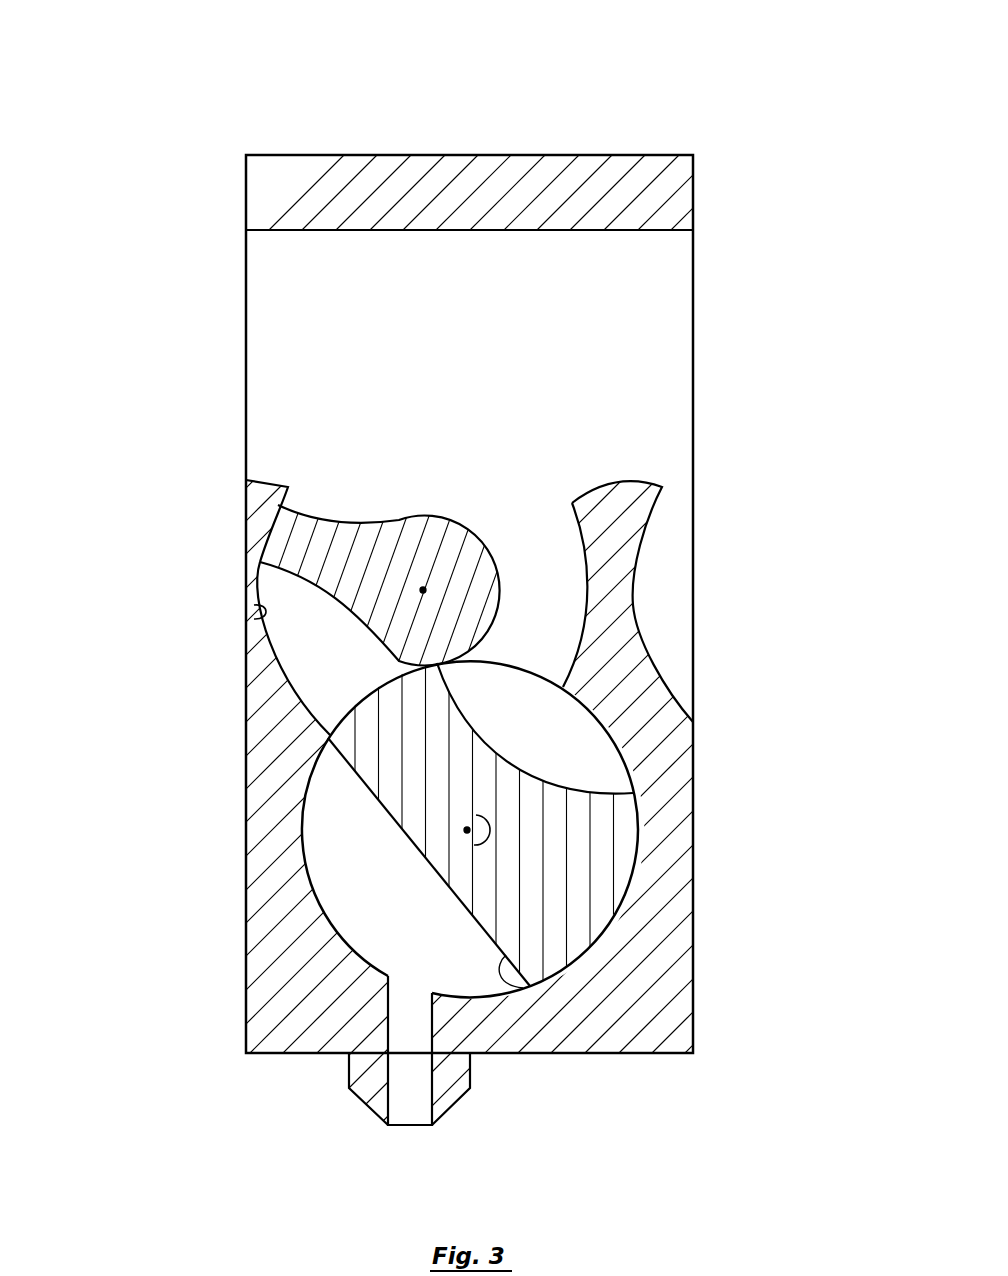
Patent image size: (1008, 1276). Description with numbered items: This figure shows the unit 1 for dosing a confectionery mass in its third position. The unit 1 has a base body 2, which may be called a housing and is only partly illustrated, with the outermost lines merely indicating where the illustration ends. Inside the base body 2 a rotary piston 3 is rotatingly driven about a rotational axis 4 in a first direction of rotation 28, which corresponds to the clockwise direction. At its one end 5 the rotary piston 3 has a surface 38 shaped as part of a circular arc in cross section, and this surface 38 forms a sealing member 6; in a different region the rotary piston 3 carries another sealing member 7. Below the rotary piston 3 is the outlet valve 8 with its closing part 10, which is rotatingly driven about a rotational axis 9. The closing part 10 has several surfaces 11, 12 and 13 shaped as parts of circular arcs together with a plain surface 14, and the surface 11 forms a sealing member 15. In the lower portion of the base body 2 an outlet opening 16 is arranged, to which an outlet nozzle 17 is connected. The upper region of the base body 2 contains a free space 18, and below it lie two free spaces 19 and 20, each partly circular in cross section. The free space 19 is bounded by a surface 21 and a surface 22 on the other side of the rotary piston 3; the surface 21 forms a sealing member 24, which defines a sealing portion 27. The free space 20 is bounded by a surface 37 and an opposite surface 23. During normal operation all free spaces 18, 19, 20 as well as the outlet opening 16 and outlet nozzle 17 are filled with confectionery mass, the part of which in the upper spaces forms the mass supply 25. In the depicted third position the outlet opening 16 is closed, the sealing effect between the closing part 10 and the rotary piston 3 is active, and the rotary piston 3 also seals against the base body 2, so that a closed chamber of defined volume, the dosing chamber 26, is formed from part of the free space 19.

The unit for dosing a confectionery mass 1 is at (477, 128).
The base body 2 is at (572, 175).
The rotary piston 3 is at (402, 533).
The rotational axis 4 is at (423, 587).
The end of the rotary piston 5 is at (290, 517).
The sealing member 6 is at (274, 508).
The sealing member 7 is at (491, 629).
The outlet valve 8 is at (409, 918).
The rotational axis 9 is at (467, 830).
The closing part 10 is at (467, 800).
The surface 11 is at (373, 690).
The surface 12 is at (610, 927).
The surface 13 is at (537, 773).
The plain surface 14 is at (515, 990).
The sealing member 15 is at (357, 702).
The outlet opening 16 is at (407, 1018).
The outlet nozzle 17 is at (370, 1078).
The free space 18 is at (491, 286).
The free space 19 is at (536, 536).
The free space 20 is at (373, 903).
The surface 21 is at (262, 643).
The surface 22 is at (595, 579).
The surface 23 is at (660, 868).
The sealing member 24 is at (267, 532).
The mass supply 25 is at (491, 392).
The dosing chamber 26 is at (325, 646).
The sealing portion 27 is at (258, 607).
The first direction of rotation 28 is at (493, 832).
The surface 37 is at (313, 895).
The surface 38 is at (268, 564).